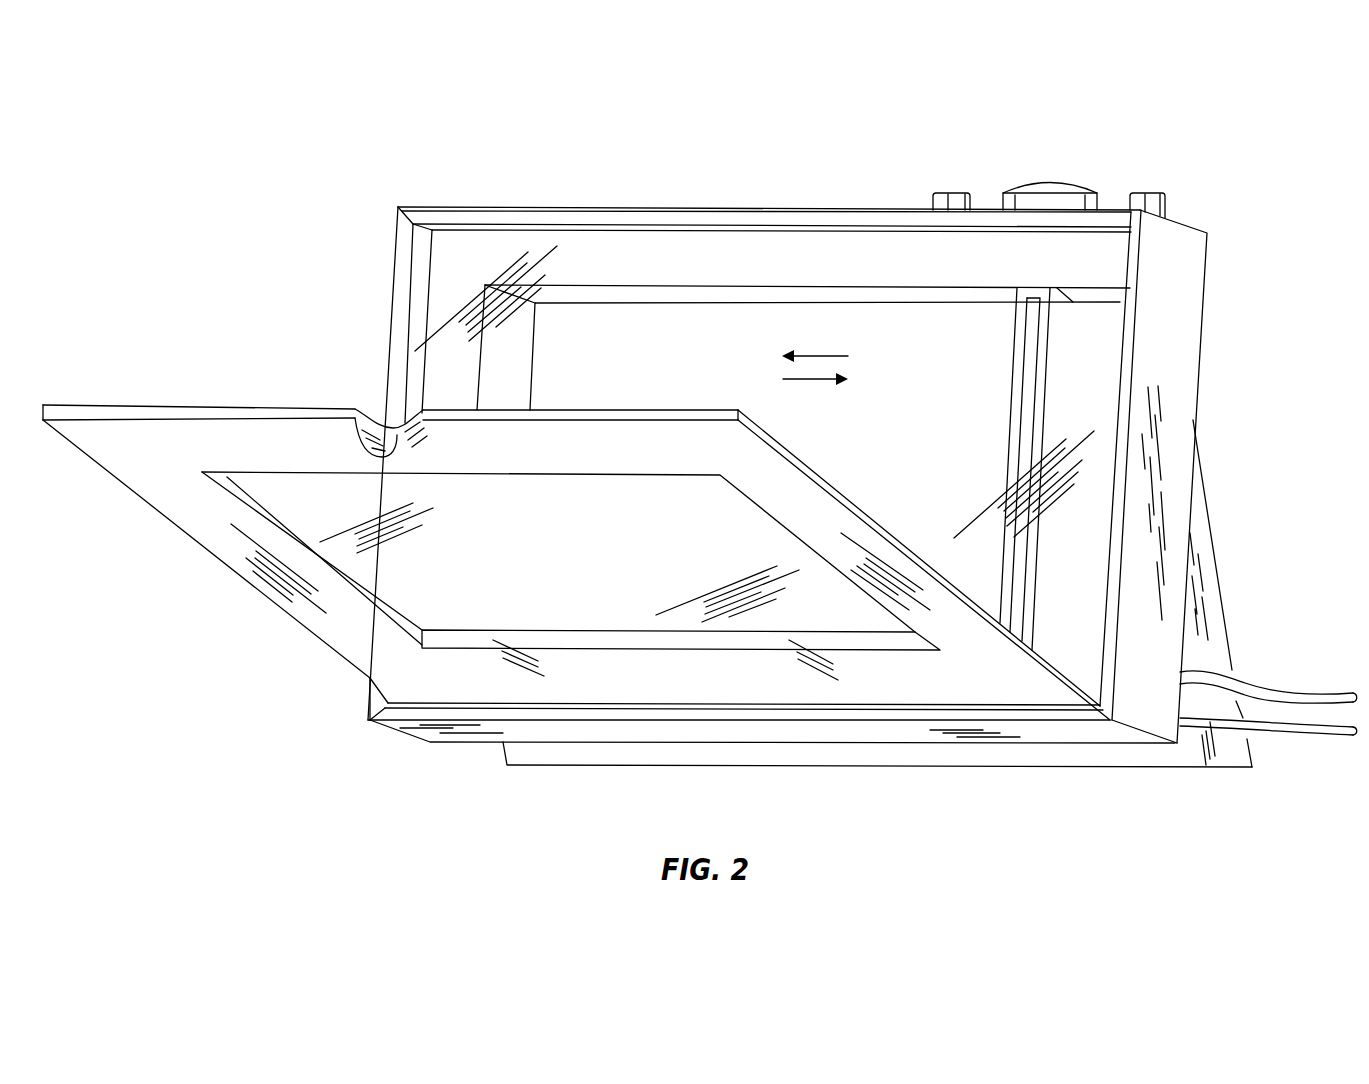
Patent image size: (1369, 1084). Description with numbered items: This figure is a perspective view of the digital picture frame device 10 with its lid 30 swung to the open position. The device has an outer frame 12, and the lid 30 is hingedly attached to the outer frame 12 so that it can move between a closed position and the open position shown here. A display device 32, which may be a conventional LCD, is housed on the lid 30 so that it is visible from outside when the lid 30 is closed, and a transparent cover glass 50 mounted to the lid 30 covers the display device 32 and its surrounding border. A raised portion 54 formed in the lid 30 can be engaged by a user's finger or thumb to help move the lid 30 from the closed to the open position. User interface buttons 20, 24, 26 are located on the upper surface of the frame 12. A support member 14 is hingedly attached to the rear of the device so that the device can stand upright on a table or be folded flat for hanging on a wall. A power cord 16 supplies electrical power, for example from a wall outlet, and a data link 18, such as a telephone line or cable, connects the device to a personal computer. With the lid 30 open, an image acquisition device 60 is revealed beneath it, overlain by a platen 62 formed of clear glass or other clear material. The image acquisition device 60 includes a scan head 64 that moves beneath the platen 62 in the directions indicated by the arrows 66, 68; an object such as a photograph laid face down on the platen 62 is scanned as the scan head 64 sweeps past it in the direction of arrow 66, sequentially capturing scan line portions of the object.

The digital picture frame device 10 is at (246, 189).
The outer frame 12 is at (390, 267).
The support member 14 is at (1215, 592).
The power cord 16 is at (1287, 738).
The data link 18 is at (1285, 688).
The user interface button 20 is at (1049, 182).
The user interface button 24 is at (960, 192).
The user interface button 26 is at (1155, 192).
The lid 30 is at (366, 630).
The display device 32 is at (623, 612).
The transparent cover glass 50 is at (738, 678).
The raised portion 54 is at (355, 418).
The image acquisition device 60 is at (988, 375).
The platen 62 is at (686, 255).
The scan head 64 is at (1032, 340).
The arrow 66 is at (815, 355).
The arrow 68 is at (815, 380).